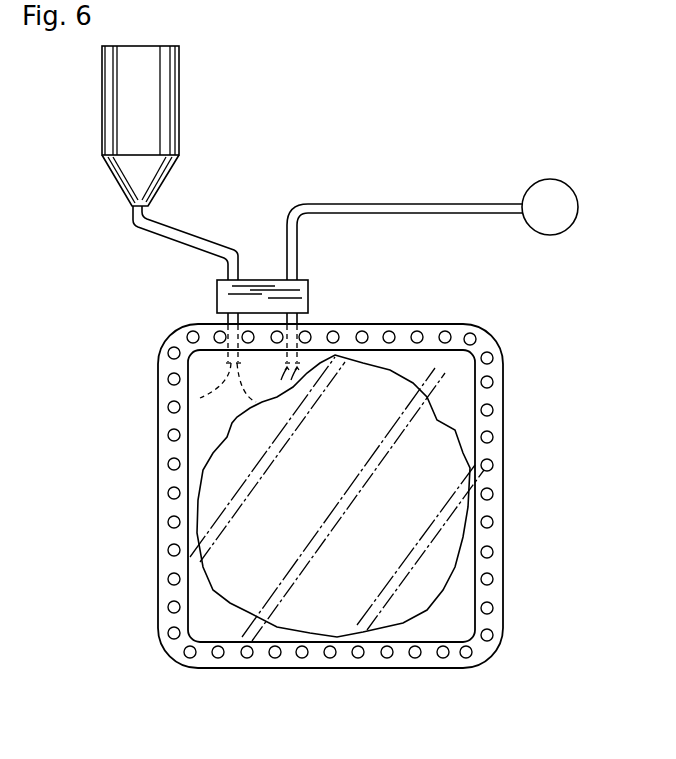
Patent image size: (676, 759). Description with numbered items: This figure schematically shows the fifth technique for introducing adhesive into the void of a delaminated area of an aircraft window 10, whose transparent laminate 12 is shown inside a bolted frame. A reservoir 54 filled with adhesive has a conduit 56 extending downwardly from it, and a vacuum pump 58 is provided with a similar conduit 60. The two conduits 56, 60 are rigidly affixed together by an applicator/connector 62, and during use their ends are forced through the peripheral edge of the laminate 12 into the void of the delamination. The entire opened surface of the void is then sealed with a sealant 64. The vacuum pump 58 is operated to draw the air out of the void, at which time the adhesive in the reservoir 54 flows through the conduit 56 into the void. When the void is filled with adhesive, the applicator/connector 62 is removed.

The aircraft window 10 is at (514, 374).
The transparent laminate 12 is at (440, 457).
The reservoir 54 is at (158, 108).
The conduit 56 is at (149, 224).
The vacuum pump 58 is at (540, 233).
The conduit 60 is at (300, 214).
The applicator/connector 62 is at (310, 290).
The sealant 64 is at (222, 383).